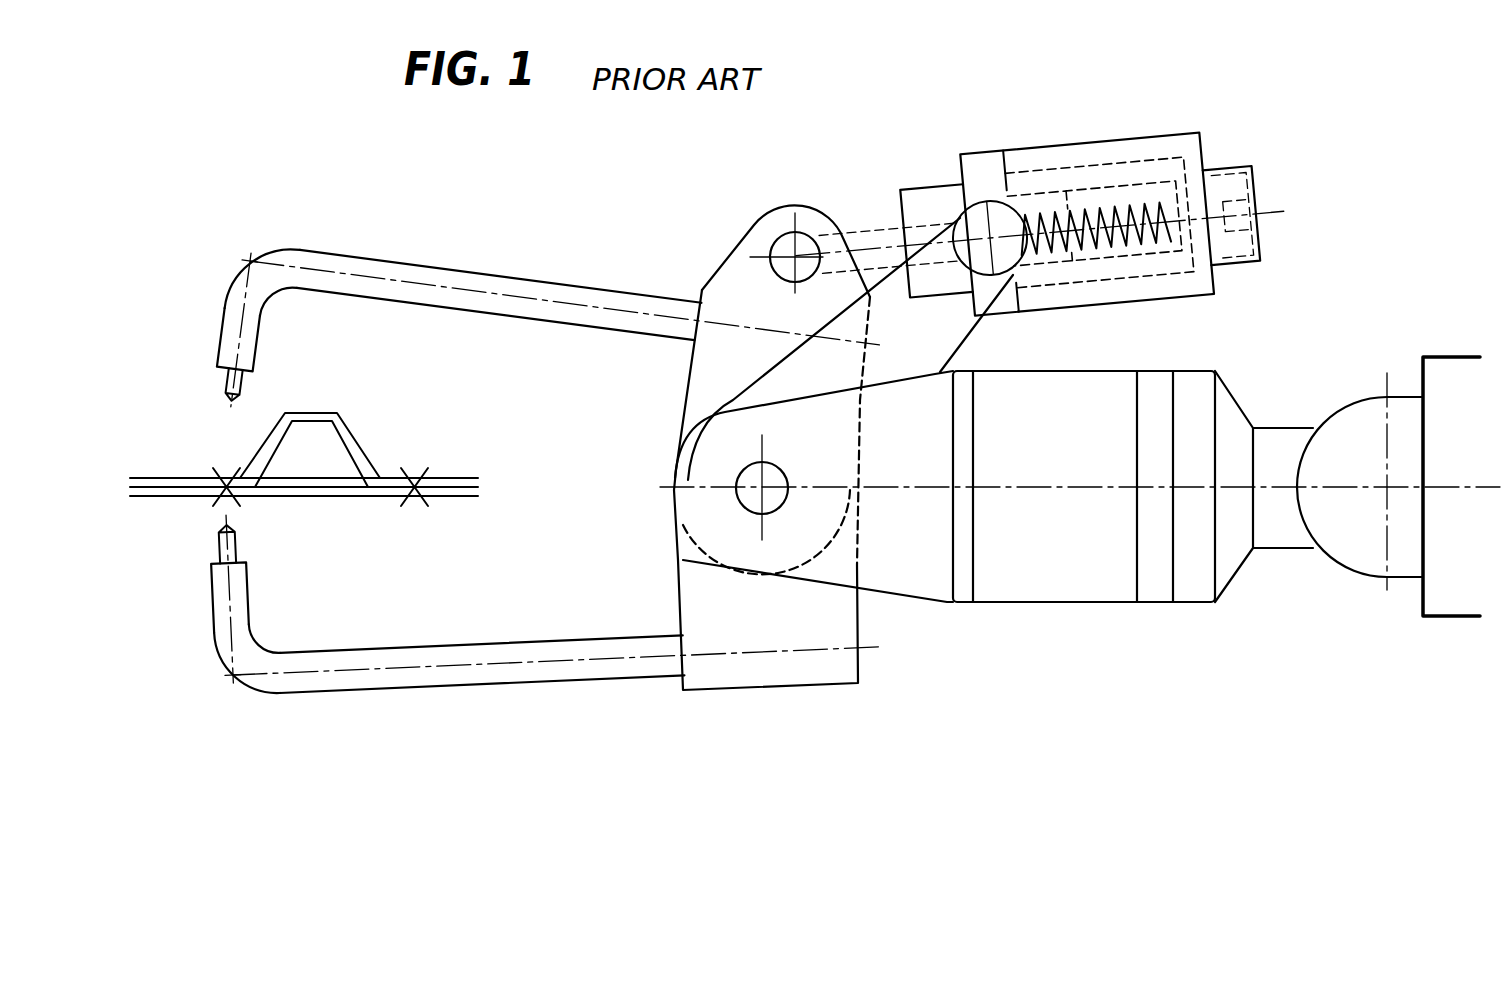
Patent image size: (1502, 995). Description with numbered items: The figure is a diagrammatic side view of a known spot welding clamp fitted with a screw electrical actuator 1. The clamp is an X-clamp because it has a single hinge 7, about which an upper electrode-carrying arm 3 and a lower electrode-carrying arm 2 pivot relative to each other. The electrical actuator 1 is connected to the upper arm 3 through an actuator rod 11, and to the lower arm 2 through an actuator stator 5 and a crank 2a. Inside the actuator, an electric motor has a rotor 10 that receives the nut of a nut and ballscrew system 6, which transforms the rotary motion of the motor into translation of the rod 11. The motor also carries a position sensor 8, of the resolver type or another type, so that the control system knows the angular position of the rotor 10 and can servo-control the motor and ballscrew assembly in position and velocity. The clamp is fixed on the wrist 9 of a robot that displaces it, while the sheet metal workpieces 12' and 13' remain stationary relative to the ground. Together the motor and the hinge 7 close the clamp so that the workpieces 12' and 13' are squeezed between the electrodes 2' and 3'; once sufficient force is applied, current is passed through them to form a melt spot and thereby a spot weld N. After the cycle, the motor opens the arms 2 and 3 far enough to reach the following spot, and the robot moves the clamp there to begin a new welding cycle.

The electrical actuator 1 is at (1070, 143).
The lower electrode-carrying arm 2 is at (546, 642).
The electrode 2' is at (181, 574).
The crank 2a is at (948, 340).
The upper electrode-carrying arm 3 is at (547, 331).
The electrode 3' is at (202, 360).
The actuator stator 5 is at (1127, 300).
The nut and ballscrew system 6 is at (1120, 208).
The hinge 7 is at (757, 497).
The position sensor 8 is at (1238, 170).
The wrist 9 is at (1193, 547).
The rotor 10 is at (1158, 187).
The actuator rod 11 is at (872, 232).
The workpiece 12' is at (297, 450).
The workpiece 13' is at (288, 530).
The spot weld N is at (223, 470).